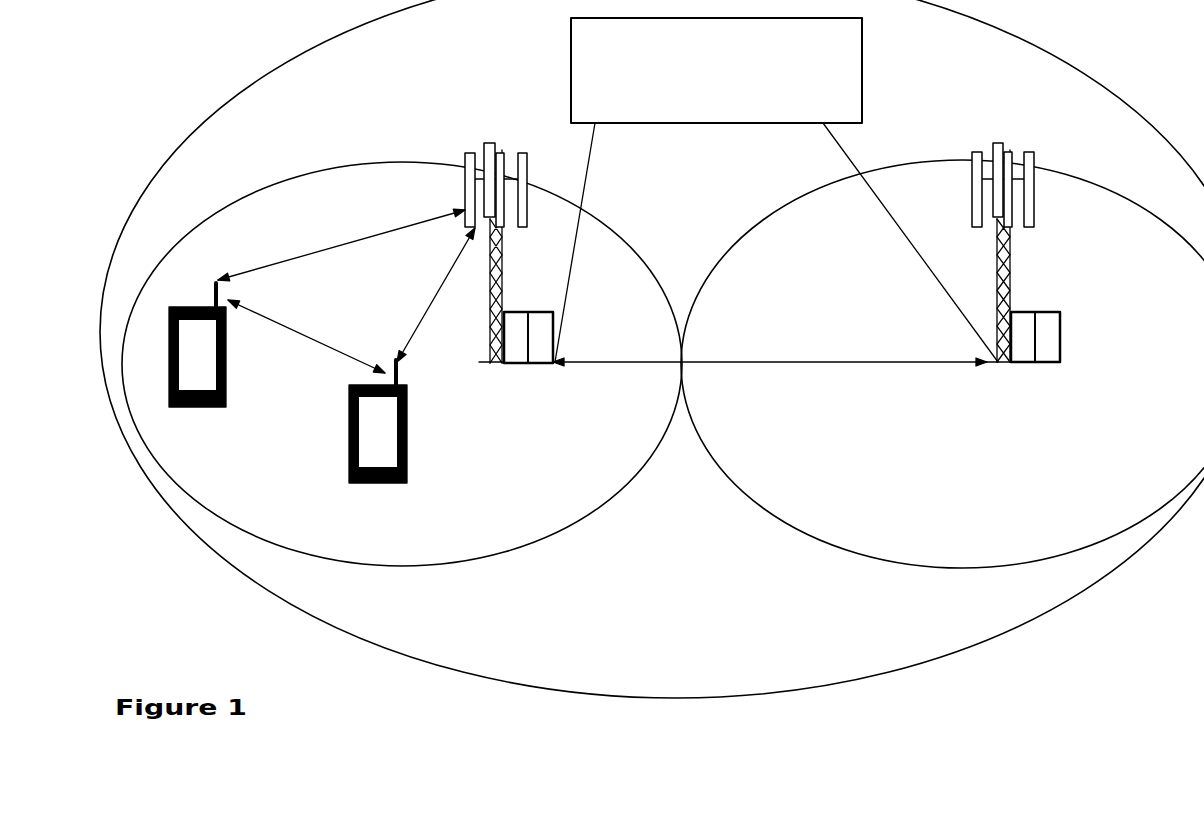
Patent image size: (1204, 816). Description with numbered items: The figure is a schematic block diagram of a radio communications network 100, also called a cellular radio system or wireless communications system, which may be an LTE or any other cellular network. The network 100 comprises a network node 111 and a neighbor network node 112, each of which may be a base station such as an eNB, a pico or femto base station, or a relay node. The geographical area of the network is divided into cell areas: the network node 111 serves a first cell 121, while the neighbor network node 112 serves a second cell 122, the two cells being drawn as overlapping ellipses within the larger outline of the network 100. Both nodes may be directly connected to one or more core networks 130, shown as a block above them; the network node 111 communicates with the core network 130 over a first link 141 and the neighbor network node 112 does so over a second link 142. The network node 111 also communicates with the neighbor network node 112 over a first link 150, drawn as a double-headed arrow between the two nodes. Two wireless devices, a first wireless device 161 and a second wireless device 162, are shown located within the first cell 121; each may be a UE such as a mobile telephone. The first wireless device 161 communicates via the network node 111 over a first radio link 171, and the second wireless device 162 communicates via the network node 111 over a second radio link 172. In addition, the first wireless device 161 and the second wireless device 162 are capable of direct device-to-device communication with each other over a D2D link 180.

The radio communications network 100 is at (997, 637).
The network node 111 is at (515, 363).
The neighbor network node 112 is at (1022, 363).
The first cell 121 is at (405, 567).
The second cell 122 is at (917, 565).
The core network 130 is at (863, 50).
The first link 141 is at (563, 323).
The second link 142 is at (913, 248).
The first link 150 is at (657, 362).
The first wireless device 161 is at (202, 408).
The second wireless device 162 is at (407, 450).
The first radio link 171 is at (312, 257).
The second radio link 172 is at (410, 327).
The D2D link 180 is at (348, 360).